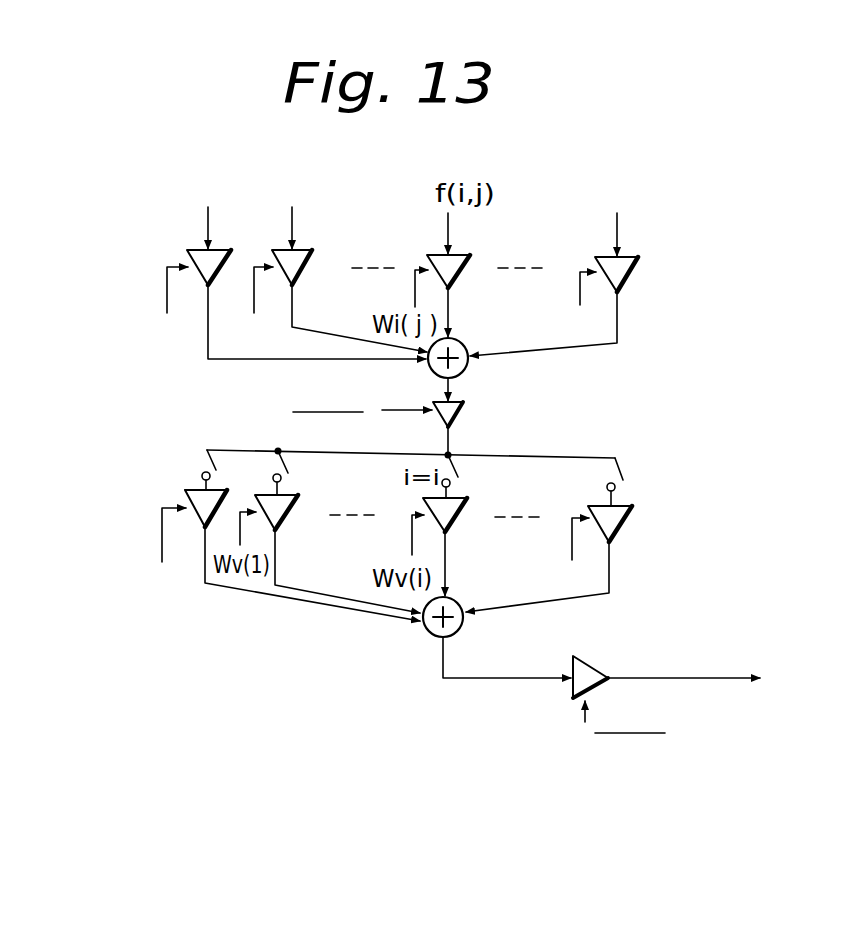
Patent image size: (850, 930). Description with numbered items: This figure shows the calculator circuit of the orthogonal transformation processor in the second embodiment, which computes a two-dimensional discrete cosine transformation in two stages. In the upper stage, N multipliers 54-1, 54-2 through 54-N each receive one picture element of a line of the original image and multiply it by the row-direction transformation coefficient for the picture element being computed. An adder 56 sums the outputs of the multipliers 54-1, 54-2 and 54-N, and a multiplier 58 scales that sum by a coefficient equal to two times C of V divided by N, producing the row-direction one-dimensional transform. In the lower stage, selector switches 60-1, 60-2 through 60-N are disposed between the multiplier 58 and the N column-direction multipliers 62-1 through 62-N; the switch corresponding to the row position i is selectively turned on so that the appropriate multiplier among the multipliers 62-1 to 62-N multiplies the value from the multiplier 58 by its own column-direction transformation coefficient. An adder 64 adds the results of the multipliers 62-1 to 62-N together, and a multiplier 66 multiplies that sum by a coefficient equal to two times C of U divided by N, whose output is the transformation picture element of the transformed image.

The multiplier 54-1 is at (201, 249).
The multiplier 54-2 is at (303, 250).
The multiplier 54-N is at (632, 257).
The adder 56 is at (462, 351).
The multiplier 58 is at (462, 413).
The selector switch 60-1 is at (208, 468).
The selector switch 60-2 is at (287, 473).
The selector switch 60-N is at (620, 478).
The multiplier 62-1 is at (185, 498).
The multiplier 62-N is at (634, 514).
The adder 64 is at (428, 634).
The multiplier 66 is at (594, 671).